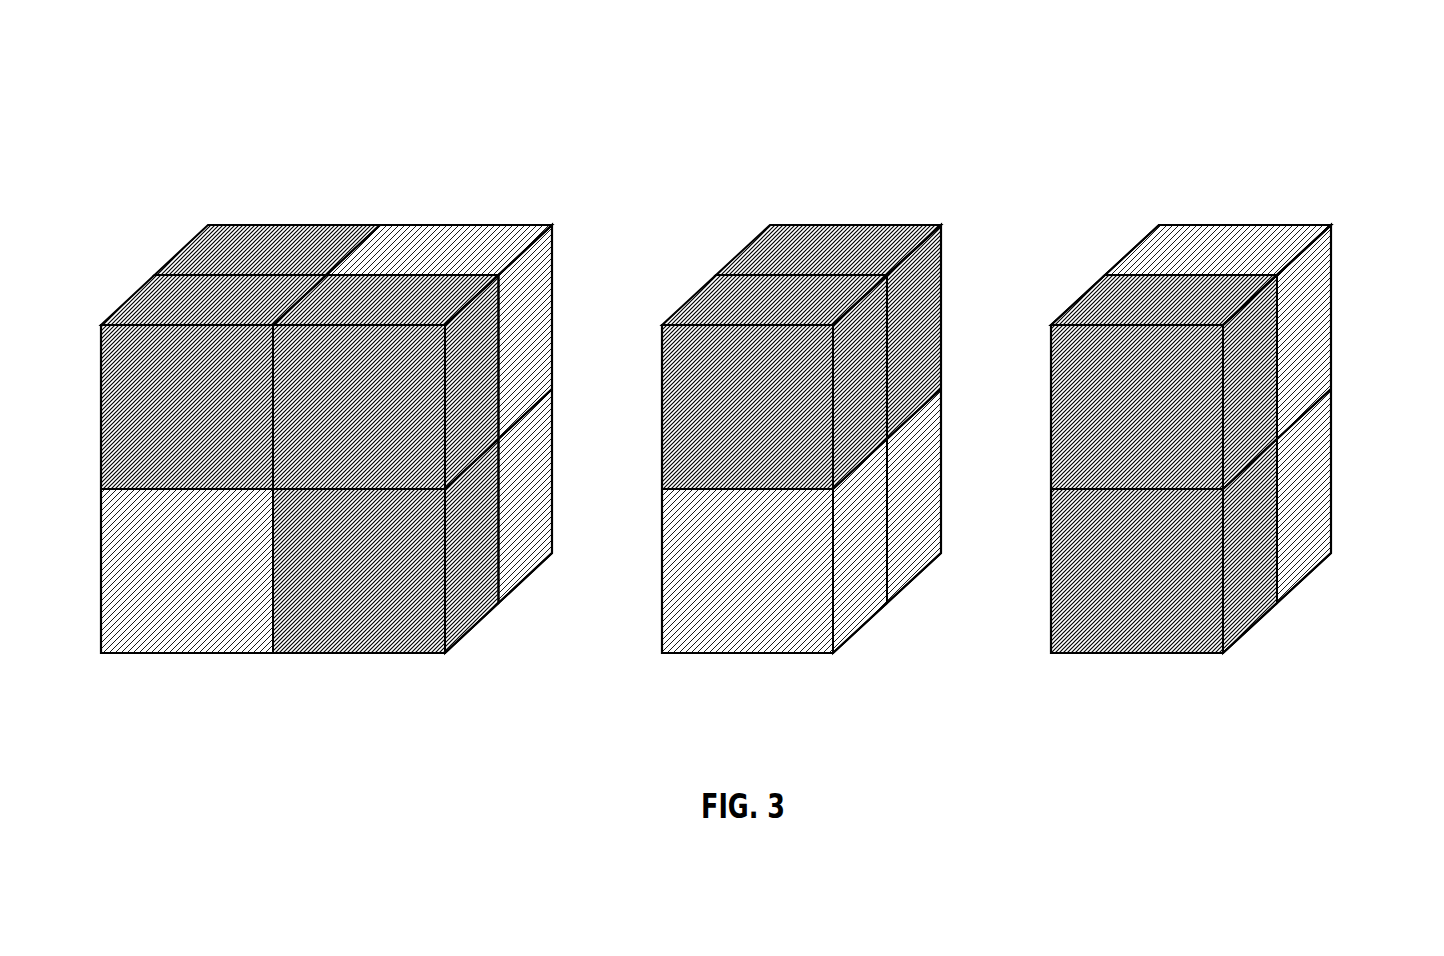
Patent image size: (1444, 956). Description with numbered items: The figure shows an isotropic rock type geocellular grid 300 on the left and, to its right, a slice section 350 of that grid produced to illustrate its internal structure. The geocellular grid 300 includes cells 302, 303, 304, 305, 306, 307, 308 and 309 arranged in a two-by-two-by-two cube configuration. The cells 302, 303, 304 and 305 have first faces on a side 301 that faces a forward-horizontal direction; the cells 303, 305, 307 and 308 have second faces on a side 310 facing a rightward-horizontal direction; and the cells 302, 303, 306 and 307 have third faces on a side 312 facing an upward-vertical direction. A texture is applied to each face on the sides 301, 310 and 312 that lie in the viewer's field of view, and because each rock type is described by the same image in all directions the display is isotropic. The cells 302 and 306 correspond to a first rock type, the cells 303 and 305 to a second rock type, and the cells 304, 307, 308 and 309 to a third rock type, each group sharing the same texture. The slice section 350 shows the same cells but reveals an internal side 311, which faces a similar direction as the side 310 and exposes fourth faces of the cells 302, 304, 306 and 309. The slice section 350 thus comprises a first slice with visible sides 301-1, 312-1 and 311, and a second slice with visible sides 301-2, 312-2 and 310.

The isotropic rock type geocellular grid 300 is at (537, 83).
The slice section 350 is at (1341, 85).
The side 301 is at (273, 673).
The visible side of first slice 301-1 is at (748, 673).
The visible side of second slice 301-2 is at (1137, 673).
The cell 302 is at (165, 418).
The cell 303 is at (336, 418).
The cell 304 is at (165, 583).
The cell 305 is at (336, 583).
The cell 306 is at (268, 245).
The cell 307 is at (443, 243).
The cell 308 is at (525, 497).
The cell 309 is at (915, 495).
The side 310 is at (565, 285).
The internal side 311 is at (950, 285).
The side 312 is at (257, 137).
The visible side of first slice 312-1 is at (918, 147).
The visible side of second slice 312-2 is at (1317, 146).